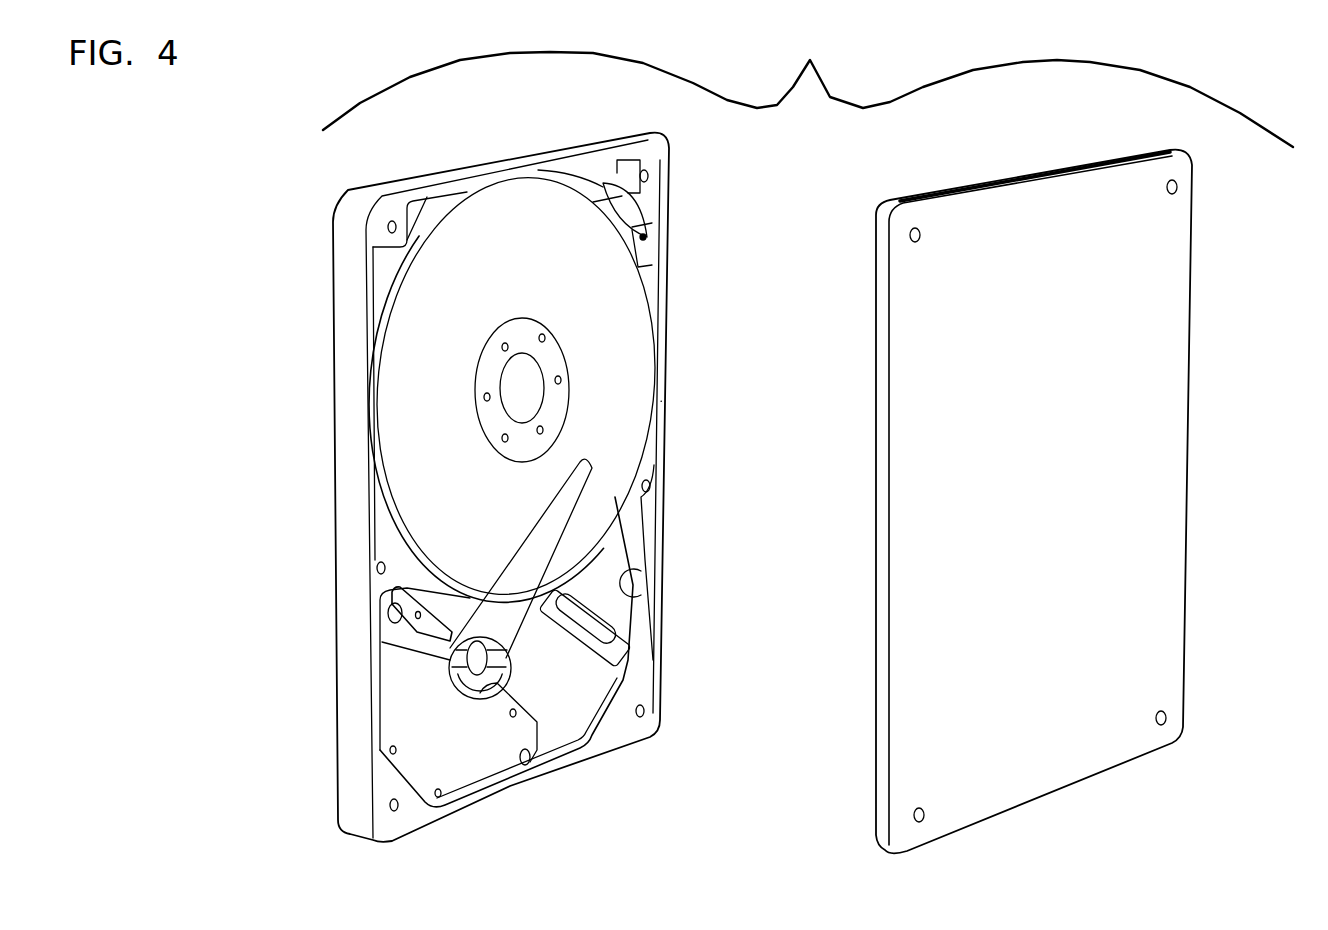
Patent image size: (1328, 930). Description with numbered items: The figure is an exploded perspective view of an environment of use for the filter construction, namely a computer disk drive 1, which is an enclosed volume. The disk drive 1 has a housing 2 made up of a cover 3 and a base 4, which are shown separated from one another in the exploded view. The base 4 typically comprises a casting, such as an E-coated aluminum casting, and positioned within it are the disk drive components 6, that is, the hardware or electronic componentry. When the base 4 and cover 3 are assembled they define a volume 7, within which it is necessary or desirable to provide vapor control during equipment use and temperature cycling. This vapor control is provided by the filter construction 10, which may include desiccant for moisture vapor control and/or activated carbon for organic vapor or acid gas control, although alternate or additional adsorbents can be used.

The computer disk drive 1 is at (736, 719).
The housing 2 is at (808, 88).
The cover 3 is at (1165, 252).
The base 4 is at (452, 175).
The disk drive components 6 is at (622, 359).
The volume 7 is at (620, 574).
The filter construction 10 is at (600, 633).